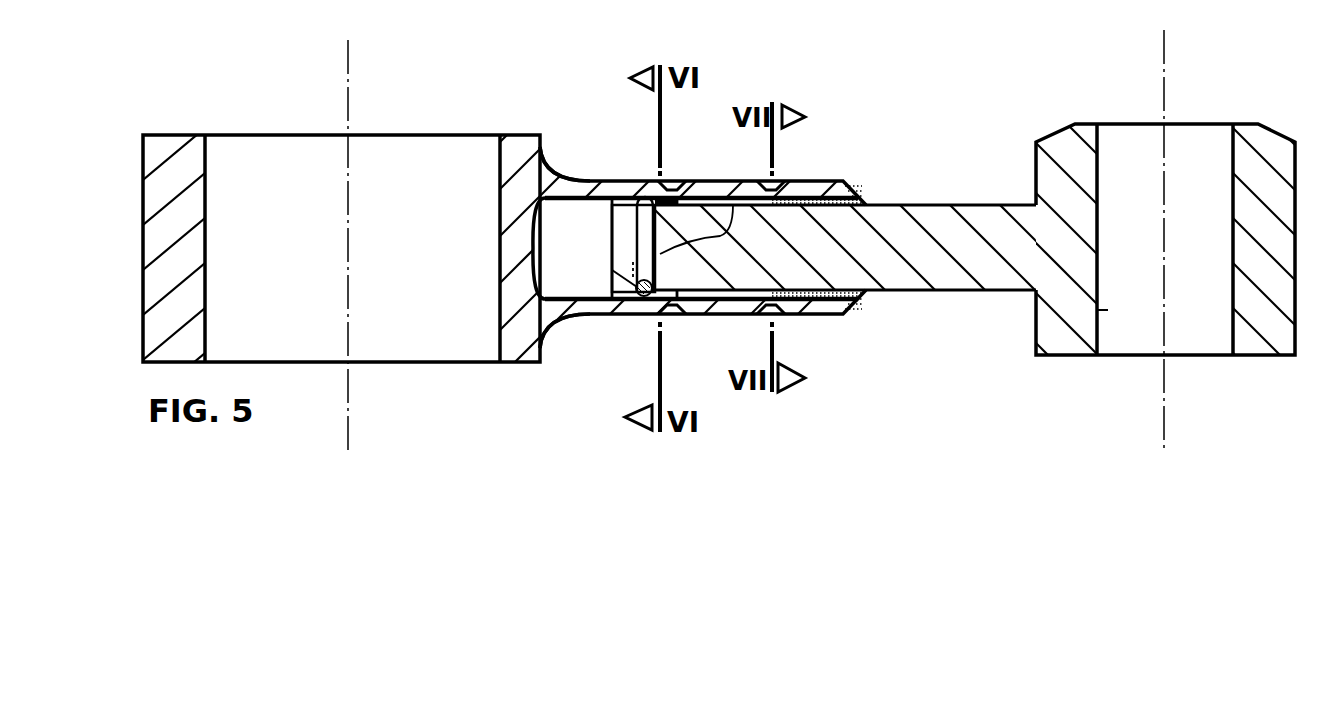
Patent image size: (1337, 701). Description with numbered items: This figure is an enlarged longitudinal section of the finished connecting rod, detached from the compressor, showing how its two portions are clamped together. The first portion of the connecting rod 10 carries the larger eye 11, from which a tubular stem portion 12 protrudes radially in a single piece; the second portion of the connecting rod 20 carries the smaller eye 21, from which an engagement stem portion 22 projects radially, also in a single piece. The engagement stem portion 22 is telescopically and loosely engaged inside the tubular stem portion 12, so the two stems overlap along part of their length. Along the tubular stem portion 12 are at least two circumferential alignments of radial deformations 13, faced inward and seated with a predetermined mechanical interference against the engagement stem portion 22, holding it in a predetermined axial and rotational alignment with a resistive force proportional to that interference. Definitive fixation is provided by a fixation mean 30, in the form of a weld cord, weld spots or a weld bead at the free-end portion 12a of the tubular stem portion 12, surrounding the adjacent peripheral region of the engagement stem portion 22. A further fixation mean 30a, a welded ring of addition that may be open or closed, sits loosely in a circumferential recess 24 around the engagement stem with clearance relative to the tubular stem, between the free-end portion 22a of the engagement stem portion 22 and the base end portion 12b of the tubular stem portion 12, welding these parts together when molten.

The first portion of the connecting rod 10 is at (555, 334).
The larger eye 11 is at (497, 193).
The tubular stem portion 12 is at (729, 183).
The free-end portion of the tubular stem portion 12a is at (850, 193).
The base end portion of the tubular stem portion 12b is at (570, 188).
The radial deformations 13 is at (772, 205).
The second portion of the connecting rod 20 is at (1015, 200).
The smaller eye 21 is at (1108, 310).
The engagement stem portion 22 is at (918, 243).
The free-end portion of the engagement stem portion 22a is at (612, 233).
The circumferential recess 24 is at (645, 297).
The fixation mean 30 is at (813, 200).
The other fixation mean 30a is at (660, 254).